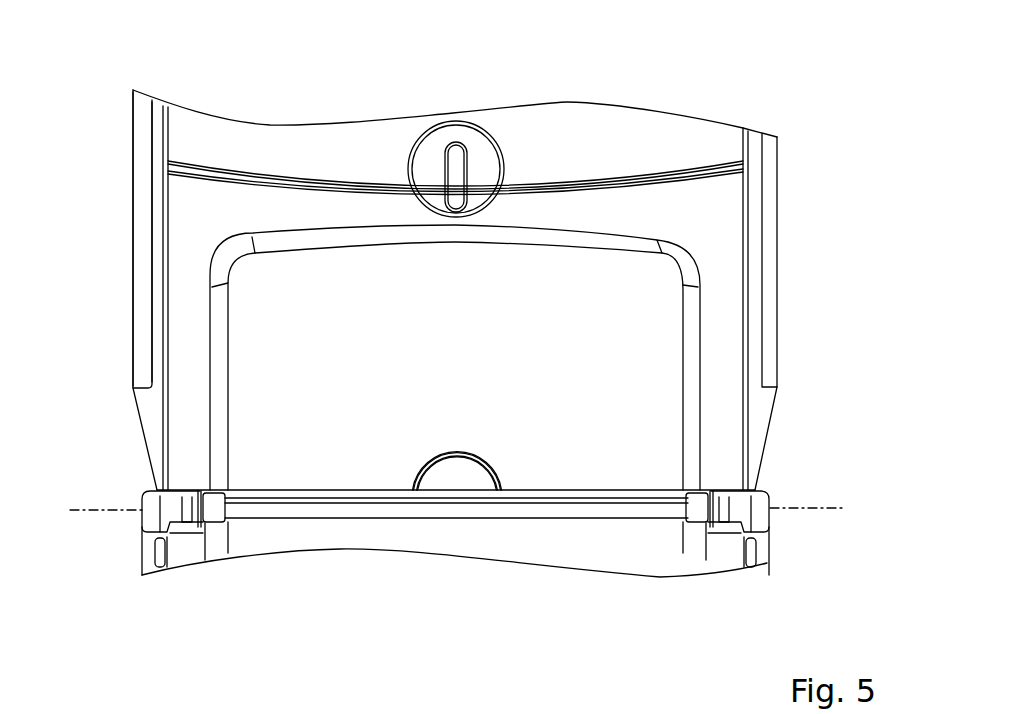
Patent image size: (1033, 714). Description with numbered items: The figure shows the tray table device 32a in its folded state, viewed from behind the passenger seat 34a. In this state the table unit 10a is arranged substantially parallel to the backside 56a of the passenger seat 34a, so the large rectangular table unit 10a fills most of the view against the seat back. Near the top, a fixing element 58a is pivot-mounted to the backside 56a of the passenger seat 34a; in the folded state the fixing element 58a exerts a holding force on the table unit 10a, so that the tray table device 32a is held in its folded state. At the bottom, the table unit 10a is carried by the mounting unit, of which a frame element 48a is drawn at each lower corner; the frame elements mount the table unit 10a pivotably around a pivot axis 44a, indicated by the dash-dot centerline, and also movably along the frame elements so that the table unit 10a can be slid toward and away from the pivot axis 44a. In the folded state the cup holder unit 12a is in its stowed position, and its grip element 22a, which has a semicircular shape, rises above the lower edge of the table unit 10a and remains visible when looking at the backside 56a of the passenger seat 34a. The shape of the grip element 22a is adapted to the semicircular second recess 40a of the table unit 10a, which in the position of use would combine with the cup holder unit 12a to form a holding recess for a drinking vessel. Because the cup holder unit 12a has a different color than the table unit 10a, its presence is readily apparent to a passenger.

The table unit 10a is at (193, 352).
The cup holder unit 12a is at (437, 476).
The grip element 22a is at (468, 478).
The tray table device 32a is at (115, 288).
The passenger seat 34a is at (707, 148).
The backside 56a is at (707, 148).
The fixing element 58a is at (455, 155).
The second recess 40a is at (497, 462).
The pivot axis 44a is at (813, 507).
The frame element 48a is at (142, 534).